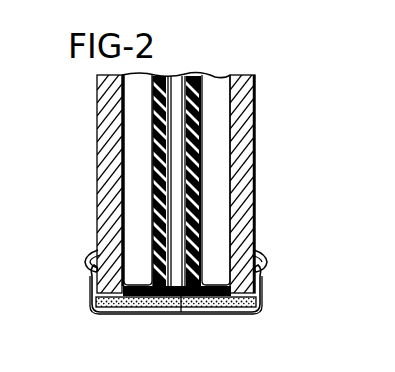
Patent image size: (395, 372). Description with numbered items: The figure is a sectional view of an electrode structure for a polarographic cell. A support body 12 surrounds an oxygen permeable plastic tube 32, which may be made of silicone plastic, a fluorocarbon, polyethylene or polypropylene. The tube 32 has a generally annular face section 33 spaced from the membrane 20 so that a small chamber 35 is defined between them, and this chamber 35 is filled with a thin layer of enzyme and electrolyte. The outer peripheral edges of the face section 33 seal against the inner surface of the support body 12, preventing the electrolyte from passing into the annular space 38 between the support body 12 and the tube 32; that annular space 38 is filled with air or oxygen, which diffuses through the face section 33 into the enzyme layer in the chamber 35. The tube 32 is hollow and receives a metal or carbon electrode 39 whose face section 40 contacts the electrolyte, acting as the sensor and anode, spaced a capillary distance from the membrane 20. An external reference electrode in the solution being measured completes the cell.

The support body 12 is at (105, 172).
The membrane 20 is at (260, 307).
The oxygen permeable plastic tube 32 is at (188, 77).
The face section 33 is at (205, 300).
The chamber 35 is at (135, 303).
The annular space 38 is at (222, 131).
The electrode 39 is at (174, 157).
The face section 40 is at (181, 300).